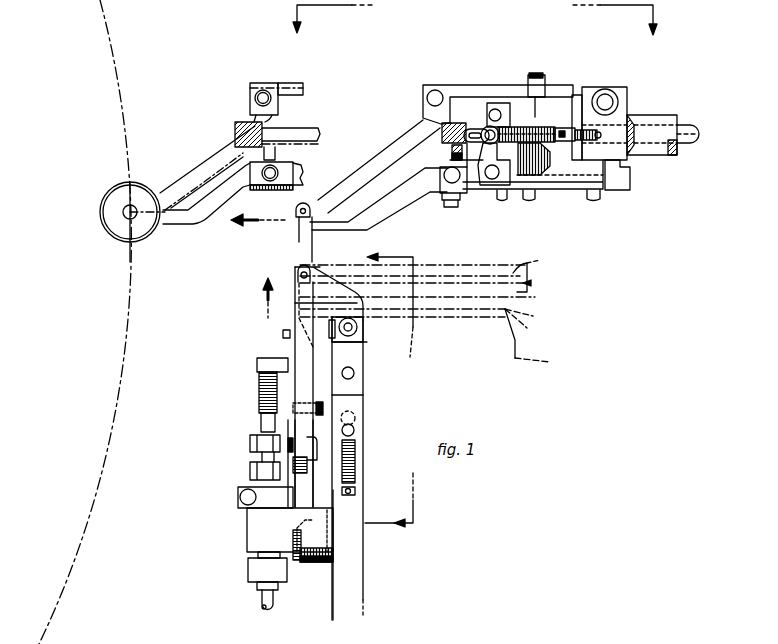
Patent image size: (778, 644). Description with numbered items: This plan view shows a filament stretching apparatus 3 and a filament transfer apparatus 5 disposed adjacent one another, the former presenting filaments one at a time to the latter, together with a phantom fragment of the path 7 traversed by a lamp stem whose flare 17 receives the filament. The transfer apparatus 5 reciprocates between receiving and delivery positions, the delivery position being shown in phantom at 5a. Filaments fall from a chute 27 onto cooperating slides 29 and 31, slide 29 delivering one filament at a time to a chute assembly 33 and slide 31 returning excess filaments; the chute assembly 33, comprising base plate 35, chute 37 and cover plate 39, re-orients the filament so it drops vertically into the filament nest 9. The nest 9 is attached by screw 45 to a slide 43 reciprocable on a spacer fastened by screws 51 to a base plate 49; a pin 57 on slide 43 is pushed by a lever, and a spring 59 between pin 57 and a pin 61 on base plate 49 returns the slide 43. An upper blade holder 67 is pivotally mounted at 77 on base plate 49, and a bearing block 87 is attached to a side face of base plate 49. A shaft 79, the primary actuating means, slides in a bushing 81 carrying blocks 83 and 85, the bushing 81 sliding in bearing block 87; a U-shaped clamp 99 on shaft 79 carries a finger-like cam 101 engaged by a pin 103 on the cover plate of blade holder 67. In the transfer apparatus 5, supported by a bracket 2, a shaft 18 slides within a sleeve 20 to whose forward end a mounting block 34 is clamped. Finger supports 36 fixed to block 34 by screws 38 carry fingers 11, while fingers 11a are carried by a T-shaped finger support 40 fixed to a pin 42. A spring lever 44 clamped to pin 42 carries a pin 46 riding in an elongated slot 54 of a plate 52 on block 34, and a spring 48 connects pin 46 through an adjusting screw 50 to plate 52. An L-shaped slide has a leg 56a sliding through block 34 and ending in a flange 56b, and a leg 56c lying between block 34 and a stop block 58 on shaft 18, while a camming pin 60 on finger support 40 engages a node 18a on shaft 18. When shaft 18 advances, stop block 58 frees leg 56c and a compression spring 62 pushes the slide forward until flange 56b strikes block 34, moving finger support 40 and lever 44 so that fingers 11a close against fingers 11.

The bracket 2 is at (474, 30).
The filament stretching apparatus 3 is at (182, 418).
The filament transfer apparatus 5 is at (596, 64).
The filament delivery position 5a is at (207, 140).
The path traversed by a lamp stem 7 is at (114, 43).
The filament nest 9 is at (353, 233).
The fingers 11 is at (187, 170).
The fingers 11a is at (203, 214).
The flare 17 is at (122, 192).
The shaft 18 is at (690, 125).
The node 18a is at (432, 120).
The sleeve 20 is at (672, 115).
The chute 27 is at (538, 340).
The slide 29 is at (533, 316).
The slide 31 is at (528, 329).
The chute assembly 33 is at (543, 287).
The mounting block 34 is at (573, 96).
The base plate 35 is at (537, 297).
The finger supports 36 is at (487, 85).
The chute 37 is at (544, 261).
The screws 38 is at (539, 73).
The cover plate 39 is at (494, 264).
The T-shaped finger support 40 is at (481, 195).
The pin 42 is at (500, 176).
The slide 43 is at (365, 344).
The spring lever 44 is at (478, 190).
The screw 45 is at (358, 328).
The pin 46 is at (492, 144).
The spring 48 is at (537, 127).
The base plate 49 is at (386, 525).
The adjusting screw 50 is at (600, 135).
The screws 51 is at (366, 380).
The plate 52 is at (572, 127).
The elongated slot 54 is at (472, 140).
The leg 56a is at (573, 196).
The flange 56b is at (631, 175).
The leg 56c is at (533, 88).
The pin 57 is at (355, 430).
The stop block 58 is at (488, 108).
The spring 59 is at (356, 446).
The camming pin 60 is at (451, 158).
The pin 61 is at (356, 491).
The compression spring 62 is at (550, 163).
The upper blade holder 67 is at (292, 227).
The pivot 77 is at (294, 555).
The shaft 79 is at (262, 601).
The bushing 81 is at (258, 555).
The block 83 is at (250, 571).
The block 85 is at (262, 496).
The bearing block 87 is at (250, 525).
The U-shaped clamp 99 is at (261, 458).
The finger-like cam 101 is at (258, 388).
The pin 103 is at (270, 358).